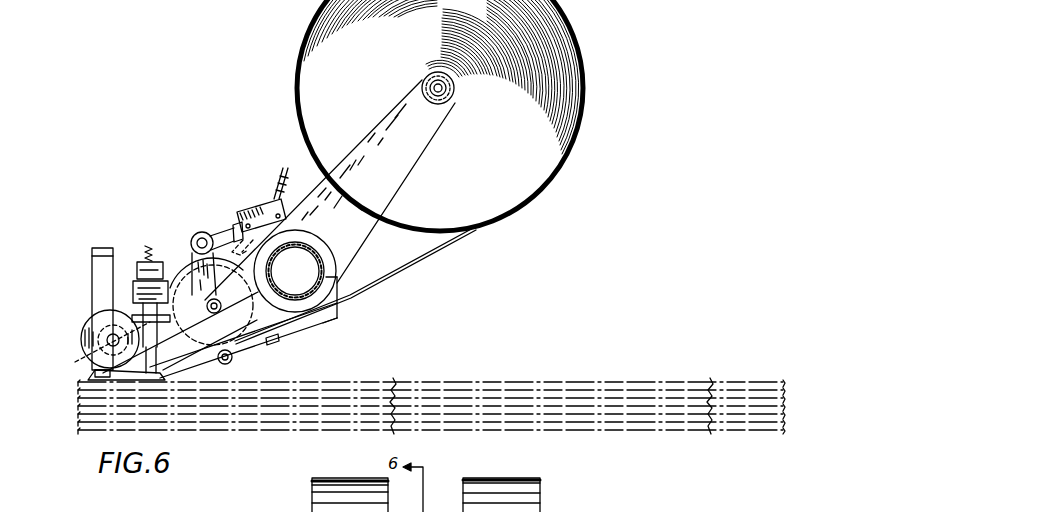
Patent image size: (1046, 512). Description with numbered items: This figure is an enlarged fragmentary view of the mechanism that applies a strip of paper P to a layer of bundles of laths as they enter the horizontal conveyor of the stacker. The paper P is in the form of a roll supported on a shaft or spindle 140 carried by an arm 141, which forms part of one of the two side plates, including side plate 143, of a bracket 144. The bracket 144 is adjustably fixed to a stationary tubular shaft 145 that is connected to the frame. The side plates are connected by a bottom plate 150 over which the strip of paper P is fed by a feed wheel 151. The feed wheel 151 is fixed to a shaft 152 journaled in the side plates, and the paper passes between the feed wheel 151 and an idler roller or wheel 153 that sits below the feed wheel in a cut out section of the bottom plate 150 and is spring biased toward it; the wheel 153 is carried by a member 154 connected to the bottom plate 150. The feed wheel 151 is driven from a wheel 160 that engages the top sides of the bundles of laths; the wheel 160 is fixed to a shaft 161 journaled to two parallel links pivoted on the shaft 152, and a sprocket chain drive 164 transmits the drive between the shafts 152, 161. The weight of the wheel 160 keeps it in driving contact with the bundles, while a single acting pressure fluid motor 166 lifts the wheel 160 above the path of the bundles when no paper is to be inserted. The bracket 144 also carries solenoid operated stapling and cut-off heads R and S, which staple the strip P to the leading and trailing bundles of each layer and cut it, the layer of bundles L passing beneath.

The shaft or spindle 140 is at (450, 90).
The arm 141 is at (317, 196).
The side plate 143 is at (221, 241).
The bracket 144 is at (340, 305).
The stationary tubular shaft 145 is at (330, 277).
The bottom plate 150 is at (330, 319).
The feed wheel 151 is at (193, 254).
The shaft 152 is at (238, 328).
The idler roller or wheel 153 is at (234, 361).
The member 154 is at (270, 344).
The wheel 160 is at (82, 333).
The shaft 161 is at (88, 350).
The sprocket chain drive 164 is at (172, 368).
The pressure fluid motor 166 is at (249, 211).
The stapling head R is at (104, 250).
The cut-off head S is at (157, 262).
The strip of paper P is at (426, 262).
The stack L is at (350, 382).